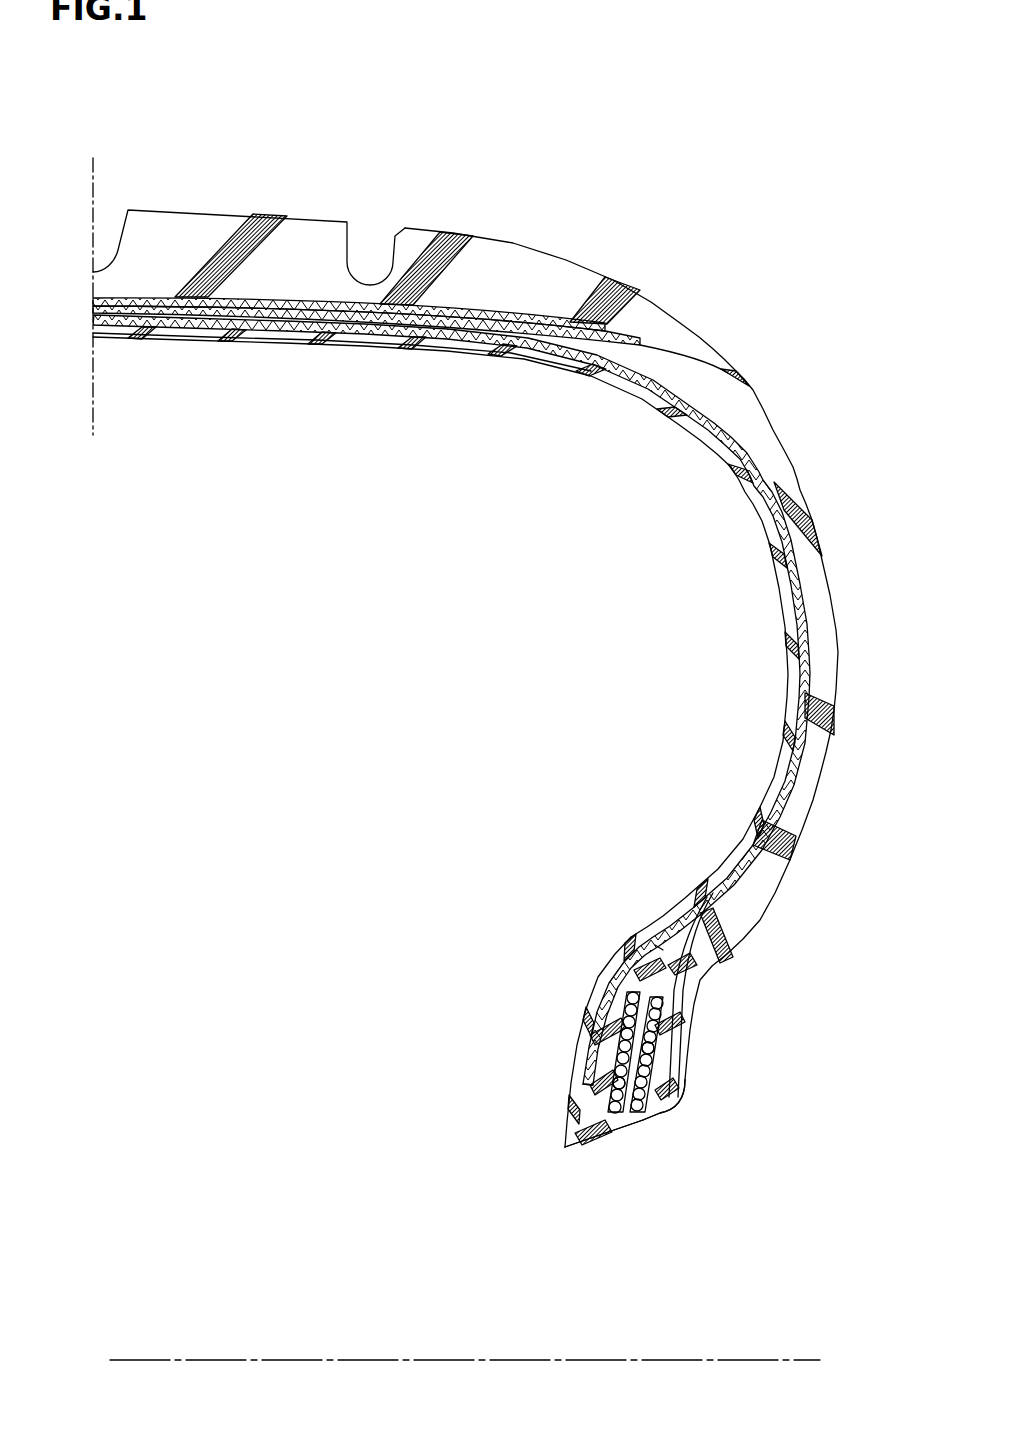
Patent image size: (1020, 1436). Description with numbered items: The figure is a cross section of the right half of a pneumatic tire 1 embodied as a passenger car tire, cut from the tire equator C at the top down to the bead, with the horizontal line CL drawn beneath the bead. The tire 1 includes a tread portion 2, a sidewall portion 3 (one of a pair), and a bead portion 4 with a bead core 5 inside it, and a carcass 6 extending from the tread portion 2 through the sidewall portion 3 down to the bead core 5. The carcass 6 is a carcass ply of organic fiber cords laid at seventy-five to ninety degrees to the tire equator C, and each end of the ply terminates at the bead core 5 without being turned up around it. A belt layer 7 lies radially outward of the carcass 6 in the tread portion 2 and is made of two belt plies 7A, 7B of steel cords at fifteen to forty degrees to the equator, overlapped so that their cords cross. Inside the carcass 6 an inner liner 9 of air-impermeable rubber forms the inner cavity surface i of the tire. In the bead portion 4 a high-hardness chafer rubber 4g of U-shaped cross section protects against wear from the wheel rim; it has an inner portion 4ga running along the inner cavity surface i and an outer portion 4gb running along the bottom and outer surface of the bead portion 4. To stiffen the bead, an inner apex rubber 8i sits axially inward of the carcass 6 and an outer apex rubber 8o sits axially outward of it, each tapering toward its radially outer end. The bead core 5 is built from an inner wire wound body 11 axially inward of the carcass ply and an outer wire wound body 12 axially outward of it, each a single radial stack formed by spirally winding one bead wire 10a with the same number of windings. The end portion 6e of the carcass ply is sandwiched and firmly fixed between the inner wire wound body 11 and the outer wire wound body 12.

The pneumatic tire 1 is at (499, 705).
The tread portion 2 is at (273, 211).
The sidewall portion 3 is at (832, 530).
The bead portion 4 is at (597, 1108).
The chafer rubber 4g is at (622, 1201).
The inner portion of chafer rubber 4ga is at (567, 1140).
The outer portion of chafer rubber 4gb is at (684, 1098).
The bead core 5 is at (563, 1053).
The carcass 6 is at (807, 680).
The end portion of carcass ply 6e is at (616, 1125).
The belt layer 7 is at (366, 396).
The belt ply 7A is at (215, 312).
The belt ply 7B is at (298, 304).
The inner apex rubber 8i is at (655, 945).
The outer apex rubber 8o is at (667, 988).
The inner liner 9 is at (787, 577).
The inner wire wound body 11 is at (618, 1062).
The outer wire wound body 12 is at (648, 1022).
The bead wire 10a is at (622, 1080).
The inner cavity surface i is at (440, 348).
The tire equator C is at (93, 280).
The center line CL is at (793, 1362).